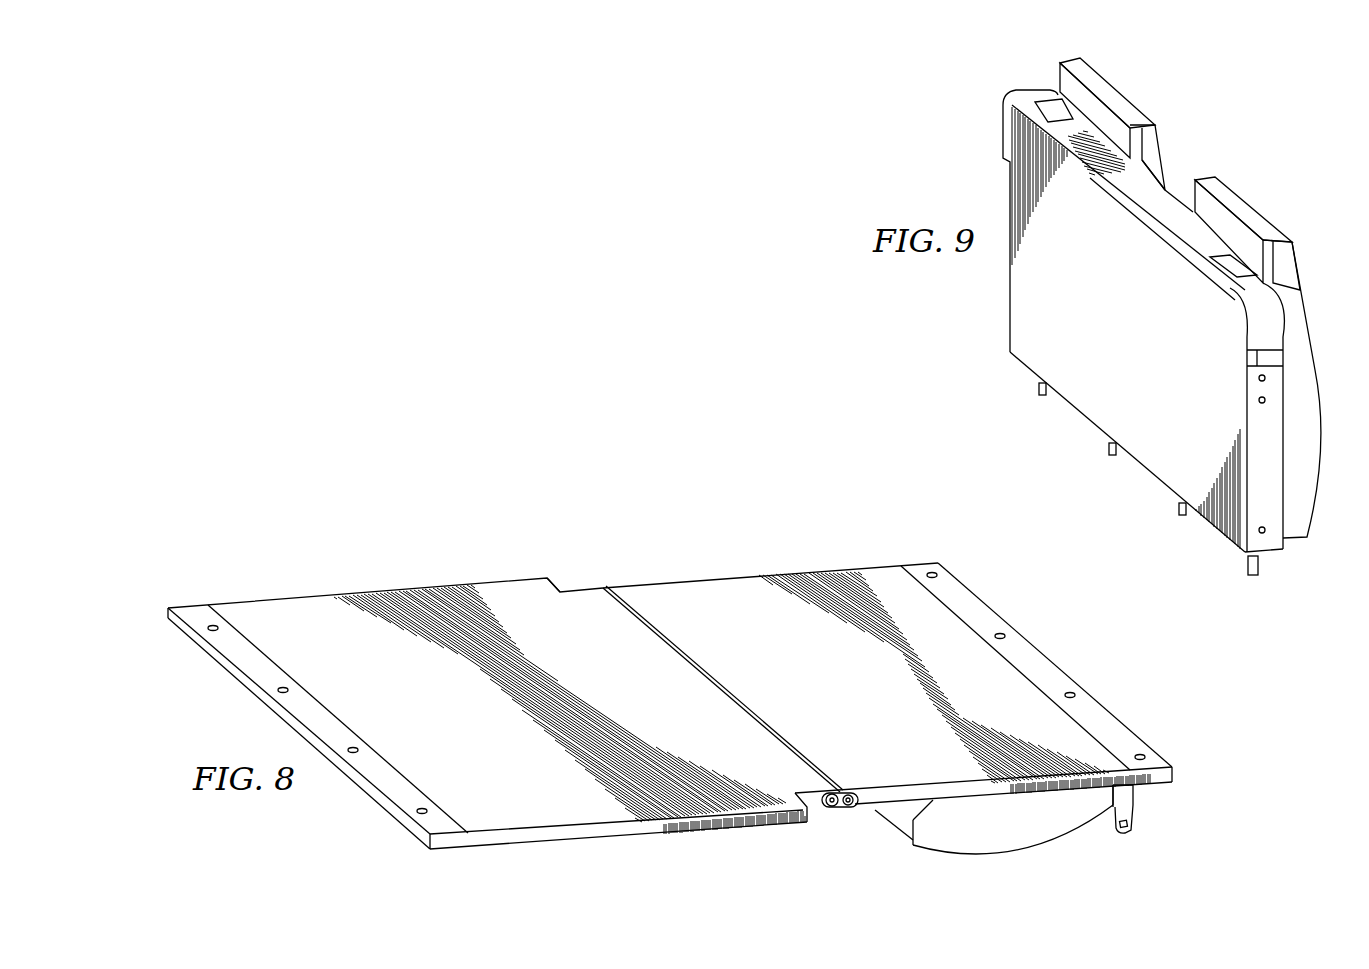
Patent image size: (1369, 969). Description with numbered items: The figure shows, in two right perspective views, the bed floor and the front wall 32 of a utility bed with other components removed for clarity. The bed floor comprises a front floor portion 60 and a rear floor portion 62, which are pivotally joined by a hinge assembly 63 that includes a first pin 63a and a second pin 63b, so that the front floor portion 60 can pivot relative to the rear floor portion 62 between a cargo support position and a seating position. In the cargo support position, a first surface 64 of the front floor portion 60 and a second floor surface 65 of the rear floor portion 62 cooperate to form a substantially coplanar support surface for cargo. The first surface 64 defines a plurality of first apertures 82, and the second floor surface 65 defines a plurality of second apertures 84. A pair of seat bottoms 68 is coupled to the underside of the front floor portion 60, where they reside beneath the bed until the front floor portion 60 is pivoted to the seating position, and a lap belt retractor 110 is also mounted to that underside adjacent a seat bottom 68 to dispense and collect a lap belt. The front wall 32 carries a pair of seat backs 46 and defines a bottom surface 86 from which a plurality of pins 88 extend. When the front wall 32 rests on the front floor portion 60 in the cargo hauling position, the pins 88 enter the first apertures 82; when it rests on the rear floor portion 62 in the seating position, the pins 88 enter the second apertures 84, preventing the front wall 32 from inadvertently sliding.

In FIG. 9, the front wall 32 is at (1179, 182).
In FIG. 9, the seat backs 46 is at (1103, 88).
In FIG. 8, the front floor portion 60 is at (675, 601).
In FIG. 8, the rear floor portion 62 is at (309, 614).
In FIG. 8, the hinge assembly 63 is at (849, 788).
In FIG. 8, the first pin 63a is at (852, 806).
In FIG. 8, the second pin 63b is at (835, 807).
In FIG. 8, the first surface 64 is at (730, 588).
In FIG. 8, the second floor surface 65 is at (500, 592).
In FIG. 8, the seat bottoms 68 is at (1018, 828).
In FIG. 8, the first apertures 82 is at (930, 573).
In FIG. 8, the second apertures 84 is at (213, 632).
In FIG. 9, the bottom surface 86 is at (1272, 558).
In FIG. 9, the pins 88 is at (1040, 389).
In FIG. 8, the lap belt retractor 110 is at (1148, 786).